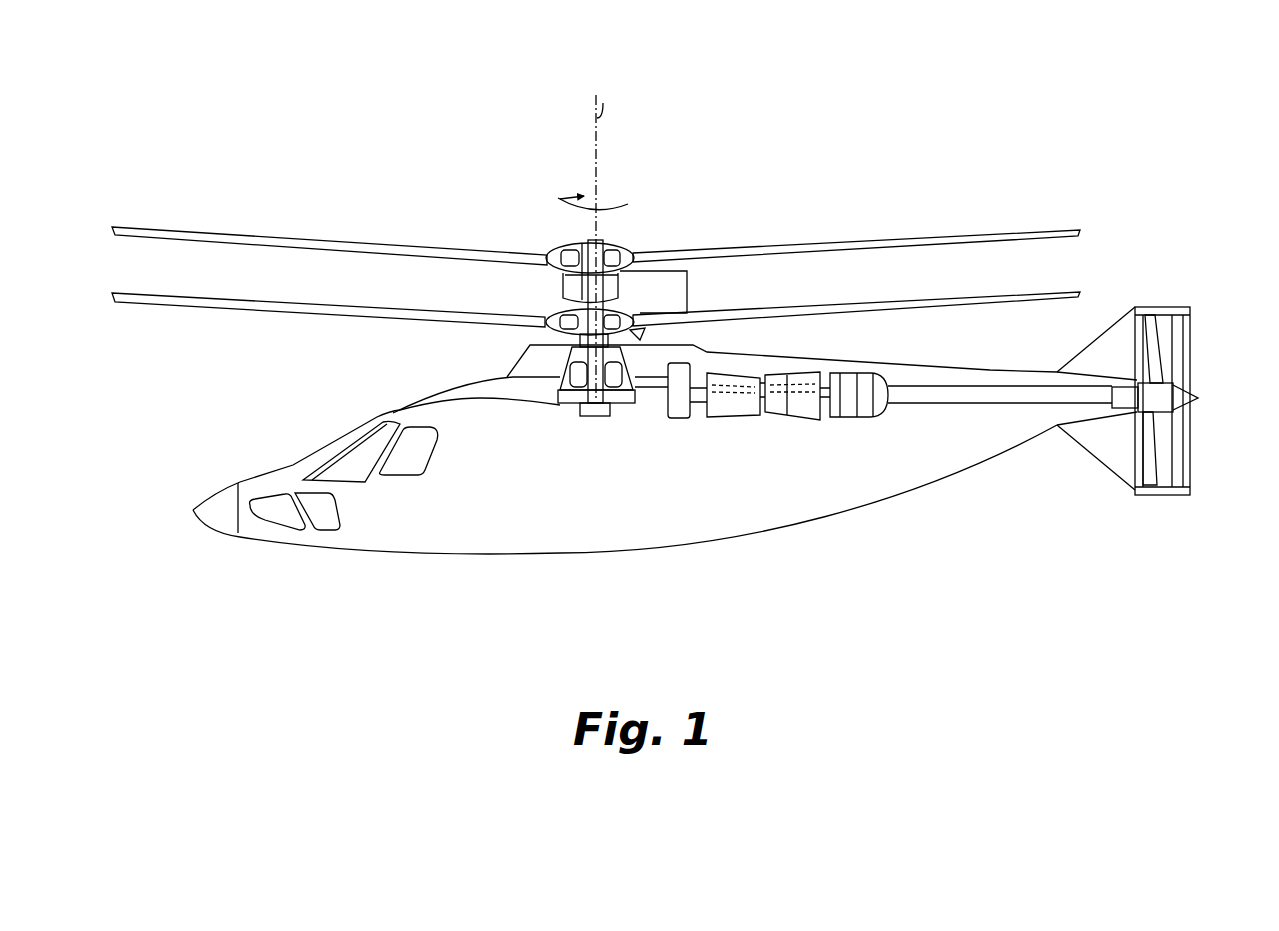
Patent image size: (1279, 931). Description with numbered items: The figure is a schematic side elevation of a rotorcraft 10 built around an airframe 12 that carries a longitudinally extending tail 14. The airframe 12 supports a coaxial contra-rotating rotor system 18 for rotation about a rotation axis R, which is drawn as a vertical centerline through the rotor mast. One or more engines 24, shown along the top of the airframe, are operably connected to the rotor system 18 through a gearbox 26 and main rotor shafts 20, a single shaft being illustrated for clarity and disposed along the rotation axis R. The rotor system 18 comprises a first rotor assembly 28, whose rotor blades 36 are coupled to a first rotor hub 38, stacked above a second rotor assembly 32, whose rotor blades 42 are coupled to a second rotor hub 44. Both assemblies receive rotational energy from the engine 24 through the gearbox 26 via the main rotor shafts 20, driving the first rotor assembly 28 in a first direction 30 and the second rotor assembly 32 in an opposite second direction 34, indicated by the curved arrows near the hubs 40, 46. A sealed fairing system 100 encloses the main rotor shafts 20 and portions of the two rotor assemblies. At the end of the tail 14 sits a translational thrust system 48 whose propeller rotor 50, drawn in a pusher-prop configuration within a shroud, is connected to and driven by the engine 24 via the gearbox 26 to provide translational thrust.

The rotorcraft 10 is at (373, 177).
The airframe 12 is at (250, 530).
The longitudinally extending tail 14 is at (1035, 417).
The coaxial contra-rotating rotor system 18 is at (657, 237).
The main rotor shafts 20 is at (562, 375).
The engine 24 is at (806, 373).
The gearbox 26 is at (610, 372).
The first rotor assembly 28 is at (538, 243).
The first direction 30 is at (560, 197).
The second rotor assembly 32 is at (533, 315).
The second direction 34 is at (621, 288).
The rotor blades 36 is at (940, 237).
The first rotor hub 38 is at (562, 245).
The upper rotor hub 40 is at (613, 245).
The rotor blades 42 is at (927, 298).
The second rotor hub 44 is at (570, 318).
The lower rotor hub 46 is at (640, 337).
The translational thrust system 48 is at (1205, 378).
The propeller rotor 50 is at (1157, 362).
The sealed fairing system 100 is at (680, 237).